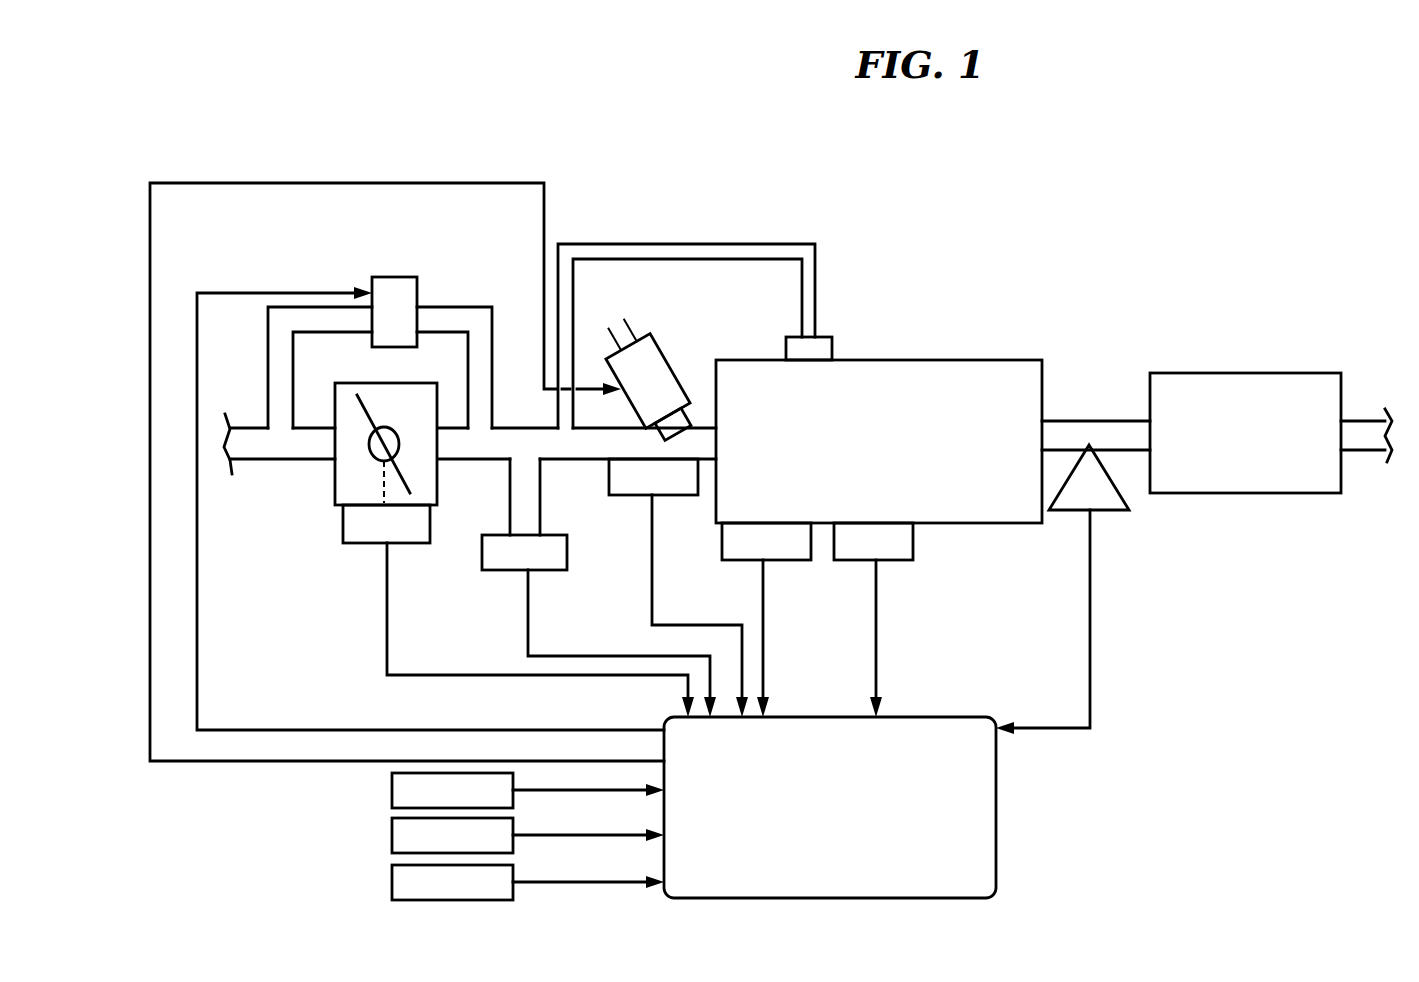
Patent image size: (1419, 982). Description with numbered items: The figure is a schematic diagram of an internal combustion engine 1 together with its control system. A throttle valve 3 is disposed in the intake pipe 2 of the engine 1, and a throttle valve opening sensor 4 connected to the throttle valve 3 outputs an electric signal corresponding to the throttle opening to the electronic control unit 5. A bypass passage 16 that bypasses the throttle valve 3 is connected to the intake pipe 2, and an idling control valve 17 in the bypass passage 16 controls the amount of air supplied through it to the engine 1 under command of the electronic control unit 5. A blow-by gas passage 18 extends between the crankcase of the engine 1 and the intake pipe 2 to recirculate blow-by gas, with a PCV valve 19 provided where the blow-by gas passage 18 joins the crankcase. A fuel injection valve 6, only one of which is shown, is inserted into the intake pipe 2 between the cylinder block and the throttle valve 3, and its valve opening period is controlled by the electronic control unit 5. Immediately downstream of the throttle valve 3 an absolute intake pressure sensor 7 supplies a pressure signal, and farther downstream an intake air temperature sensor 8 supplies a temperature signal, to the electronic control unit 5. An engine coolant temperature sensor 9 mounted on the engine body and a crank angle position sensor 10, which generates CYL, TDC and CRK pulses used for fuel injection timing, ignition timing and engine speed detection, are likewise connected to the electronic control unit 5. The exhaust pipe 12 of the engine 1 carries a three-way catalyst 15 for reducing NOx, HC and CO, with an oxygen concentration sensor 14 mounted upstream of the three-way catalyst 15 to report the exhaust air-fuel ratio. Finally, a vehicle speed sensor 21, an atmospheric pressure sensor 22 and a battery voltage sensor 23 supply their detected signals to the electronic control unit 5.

The internal combustion engine 1 is at (977, 359).
The intake pipe 2 is at (512, 428).
The throttle valve 3 is at (359, 410).
The throttle valve opening sensor 4 is at (417, 543).
The electronic control unit 5 is at (947, 716).
The fuel injection valve 6 is at (667, 365).
The absolute intake pressure sensor 7 is at (553, 570).
The intake air temperature sensor 8 is at (682, 495).
The engine coolant temperature sensor 9 is at (797, 560).
The crank angle position sensor 10 is at (900, 560).
The exhaust pipe 12 is at (1113, 421).
The oxygen concentration sensor 14 is at (1120, 510).
The three-way catalyst 15 is at (1239, 493).
The bypass passage 16 is at (318, 305).
The idling control valve 17 is at (418, 285).
The blow-by gas passage 18 is at (715, 243).
The PCV valve 19 is at (832, 343).
The vehicle speed sensor 21 is at (392, 788).
The atmospheric pressure sensor 22 is at (392, 832).
The battery voltage sensor 23 is at (392, 878).